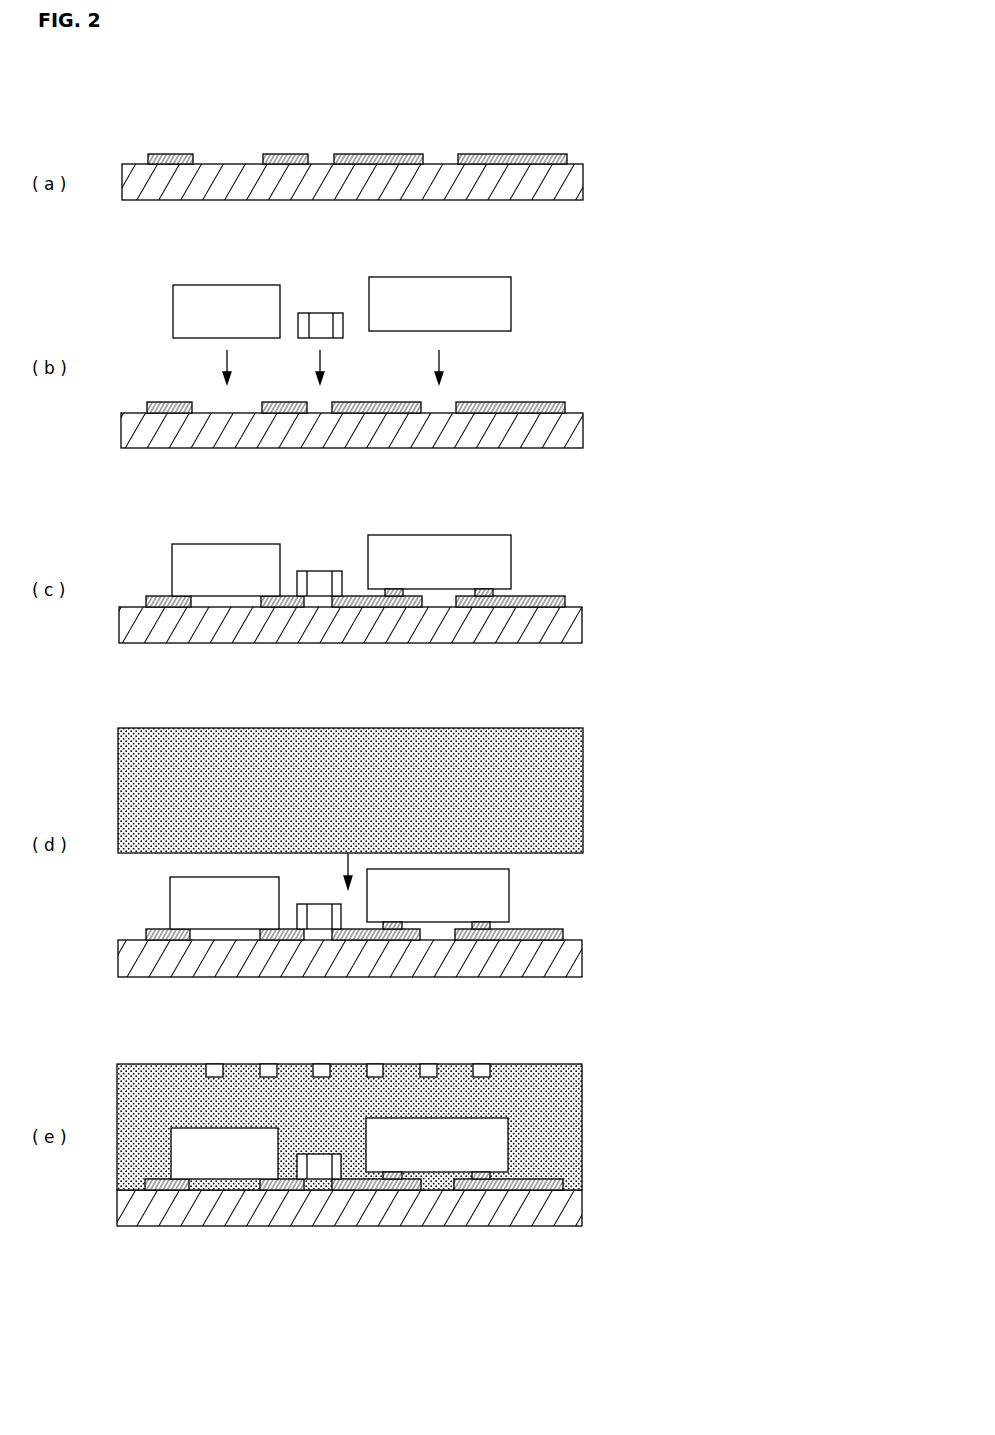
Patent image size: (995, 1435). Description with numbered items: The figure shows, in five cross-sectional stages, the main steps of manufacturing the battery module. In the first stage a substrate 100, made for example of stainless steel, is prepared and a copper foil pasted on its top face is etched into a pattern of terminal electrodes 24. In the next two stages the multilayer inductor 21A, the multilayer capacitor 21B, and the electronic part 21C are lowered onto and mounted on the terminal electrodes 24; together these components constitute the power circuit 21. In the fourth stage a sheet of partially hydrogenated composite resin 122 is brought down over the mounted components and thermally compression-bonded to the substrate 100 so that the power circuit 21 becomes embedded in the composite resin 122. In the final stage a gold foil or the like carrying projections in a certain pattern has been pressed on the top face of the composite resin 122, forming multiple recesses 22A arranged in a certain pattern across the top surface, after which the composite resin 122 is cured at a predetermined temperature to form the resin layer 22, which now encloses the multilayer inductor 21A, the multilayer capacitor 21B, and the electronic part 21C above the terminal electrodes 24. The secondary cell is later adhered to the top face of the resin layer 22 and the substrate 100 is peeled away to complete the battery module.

The substrate 100 is at (563, 191).
The terminal electrodes 24 is at (388, 154).
The power circuit 21 is at (524, 298).
The multilayer inductor 21A is at (425, 305).
The multilayer capacitor 21B is at (328, 315).
The electronic part 21C is at (237, 305).
The composite resin 122 is at (525, 783).
The resin layer 22 is at (540, 1094).
The recesses 22A is at (428, 1068).